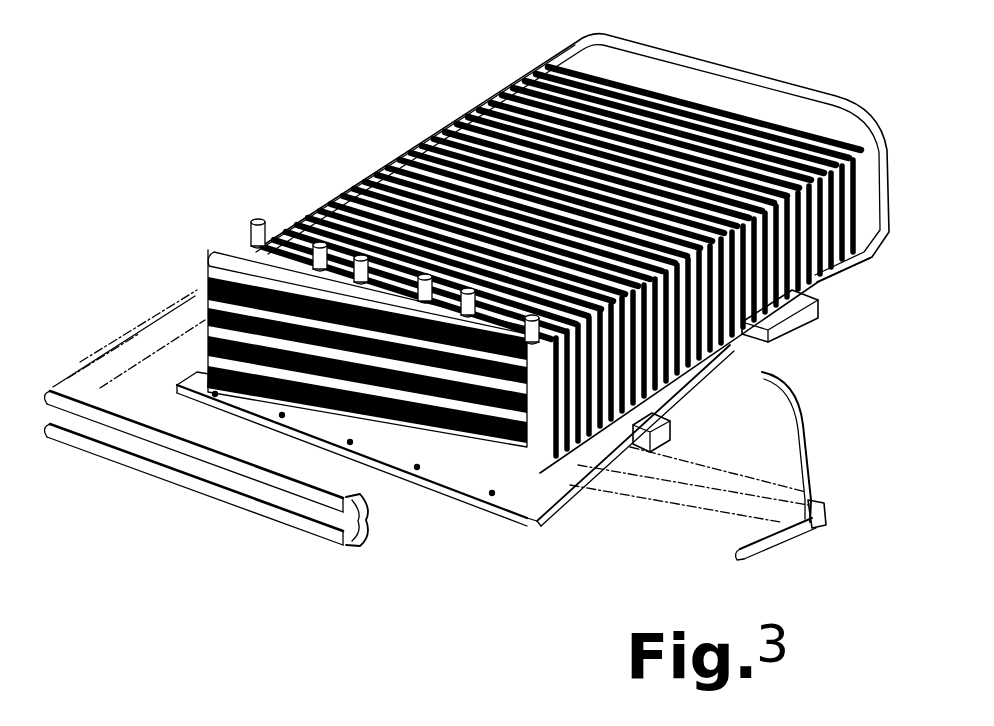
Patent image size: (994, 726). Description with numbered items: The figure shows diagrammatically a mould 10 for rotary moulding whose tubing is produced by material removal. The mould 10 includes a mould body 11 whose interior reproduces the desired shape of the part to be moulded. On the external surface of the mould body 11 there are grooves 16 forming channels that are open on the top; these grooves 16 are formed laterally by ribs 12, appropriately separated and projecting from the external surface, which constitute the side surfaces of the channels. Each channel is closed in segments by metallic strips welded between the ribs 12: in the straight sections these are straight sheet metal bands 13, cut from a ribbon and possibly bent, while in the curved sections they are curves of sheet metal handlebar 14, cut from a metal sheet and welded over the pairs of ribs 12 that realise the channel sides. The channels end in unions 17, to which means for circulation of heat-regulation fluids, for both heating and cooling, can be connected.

The mould 10 is at (291, 81).
The mould body 11 is at (527, 520).
The ribs 12 is at (497, 118).
The straight sheet metal bands 13 is at (243, 508).
The curves of sheet metal handlebar 14 is at (368, 543).
The grooves 16 is at (370, 215).
The unions 17 is at (801, 338).